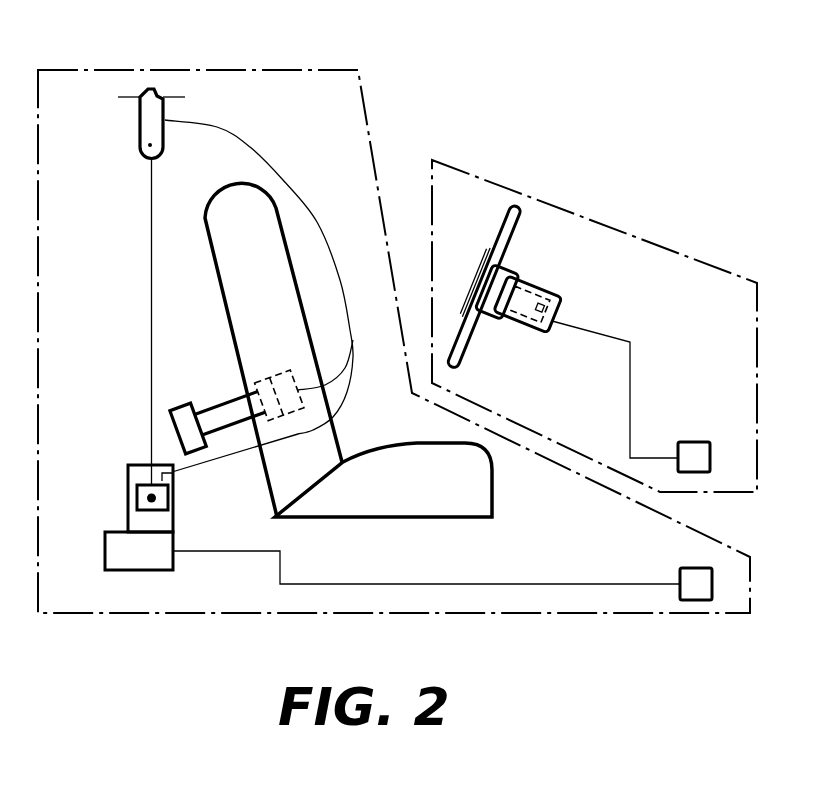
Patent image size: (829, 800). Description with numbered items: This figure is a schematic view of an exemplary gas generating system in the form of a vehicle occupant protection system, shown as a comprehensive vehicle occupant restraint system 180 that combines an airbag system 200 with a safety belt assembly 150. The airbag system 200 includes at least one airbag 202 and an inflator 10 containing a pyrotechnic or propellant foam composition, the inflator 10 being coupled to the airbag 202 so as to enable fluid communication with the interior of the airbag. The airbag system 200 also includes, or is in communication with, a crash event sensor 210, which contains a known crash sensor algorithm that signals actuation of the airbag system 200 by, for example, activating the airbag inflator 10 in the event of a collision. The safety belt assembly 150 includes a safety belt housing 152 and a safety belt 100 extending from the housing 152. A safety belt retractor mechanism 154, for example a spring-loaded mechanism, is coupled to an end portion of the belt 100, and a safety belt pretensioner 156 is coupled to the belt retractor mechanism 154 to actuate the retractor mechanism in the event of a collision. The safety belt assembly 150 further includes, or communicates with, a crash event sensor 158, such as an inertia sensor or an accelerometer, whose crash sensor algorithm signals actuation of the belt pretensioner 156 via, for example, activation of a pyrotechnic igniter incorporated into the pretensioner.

The safety belt assembly 150 is at (146, 69).
The vehicle occupant restraint system 180 is at (488, 86).
The airbag system 200 is at (712, 167).
The safety belt 100 is at (273, 162).
The safety belt retractor mechanism 154 is at (137, 465).
The safety belt housing 152 is at (140, 497).
The safety belt pretensioner 156 is at (137, 571).
The crash event sensor 158 is at (680, 568).
The airbag 202 is at (513, 275).
The inflator 10 is at (520, 300).
The crash event sensor 210 is at (727, 386).